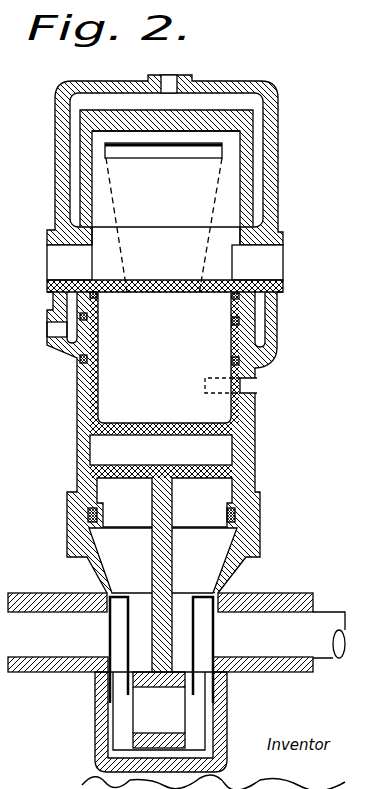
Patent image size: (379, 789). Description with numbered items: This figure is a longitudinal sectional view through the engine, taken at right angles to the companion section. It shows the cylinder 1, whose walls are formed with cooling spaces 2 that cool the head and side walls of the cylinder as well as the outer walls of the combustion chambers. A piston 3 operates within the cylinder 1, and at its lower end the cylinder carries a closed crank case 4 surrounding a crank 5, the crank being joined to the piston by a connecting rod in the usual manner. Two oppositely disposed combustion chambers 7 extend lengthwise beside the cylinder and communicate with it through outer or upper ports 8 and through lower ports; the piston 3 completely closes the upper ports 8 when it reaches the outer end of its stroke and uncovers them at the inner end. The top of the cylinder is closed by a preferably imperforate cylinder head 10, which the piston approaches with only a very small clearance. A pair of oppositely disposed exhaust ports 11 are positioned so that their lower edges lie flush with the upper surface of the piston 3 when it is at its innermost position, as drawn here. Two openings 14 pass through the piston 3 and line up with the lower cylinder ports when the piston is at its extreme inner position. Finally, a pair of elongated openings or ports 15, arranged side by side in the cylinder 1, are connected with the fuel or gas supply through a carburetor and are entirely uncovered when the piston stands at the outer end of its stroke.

The cylinder 1 is at (257, 84).
The cooling spaces 2 is at (249, 107).
The piston 3 is at (220, 518).
The crank case 4 is at (230, 577).
The crank 5 is at (185, 622).
The combustion chambers 7 is at (117, 233).
The outer or upper ports 8 is at (152, 153).
The cylinder head 10 is at (213, 127).
The exhaust ports 11 is at (305, 264).
The ports or openings 14 is at (167, 345).
The elongated openings or ports 15 is at (253, 387).